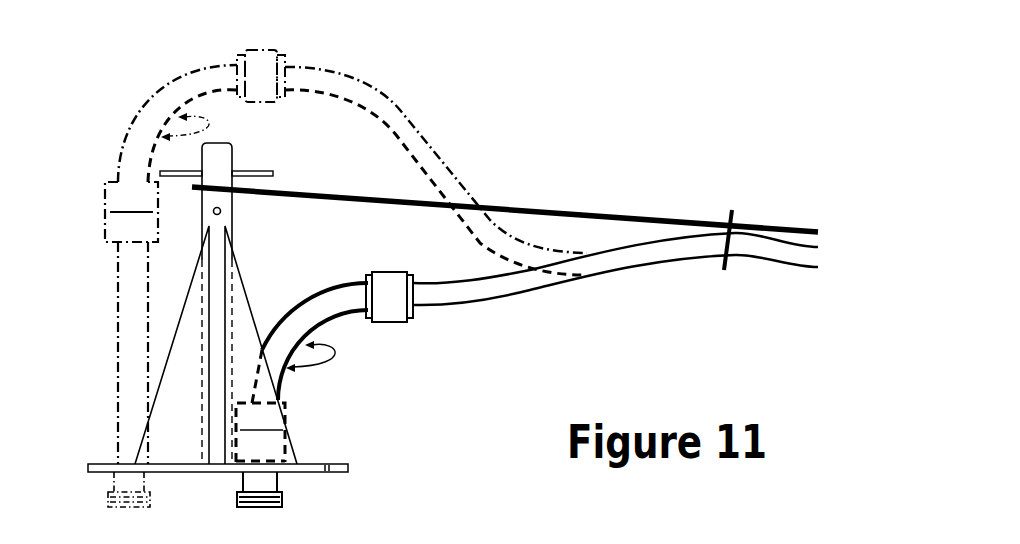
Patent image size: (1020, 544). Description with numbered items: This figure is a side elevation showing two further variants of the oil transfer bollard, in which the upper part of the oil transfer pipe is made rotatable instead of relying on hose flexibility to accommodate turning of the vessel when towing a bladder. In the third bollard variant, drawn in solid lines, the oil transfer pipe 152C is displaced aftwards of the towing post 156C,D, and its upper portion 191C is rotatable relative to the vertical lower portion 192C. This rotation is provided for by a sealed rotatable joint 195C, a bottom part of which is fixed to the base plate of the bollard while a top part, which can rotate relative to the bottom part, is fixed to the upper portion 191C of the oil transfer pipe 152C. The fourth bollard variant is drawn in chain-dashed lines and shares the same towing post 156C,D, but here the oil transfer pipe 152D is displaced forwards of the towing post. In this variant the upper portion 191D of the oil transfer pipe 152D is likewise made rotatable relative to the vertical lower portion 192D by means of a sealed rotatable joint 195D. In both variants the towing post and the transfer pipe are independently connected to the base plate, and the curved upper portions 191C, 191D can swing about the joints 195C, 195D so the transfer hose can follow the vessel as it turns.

The oil transfer pipe 152D is at (307, 149).
The upper portion of the oil transfer pipe 191D is at (128, 132).
The sealed rotatable joint 195D is at (125, 230).
The vertical lower portion of the oil transfer pipe 192D is at (117, 343).
The towing post 156C,D is at (218, 155).
The oil transfer pipe 152C is at (540, 329).
The upper portion of the oil transfer pipe 191C is at (333, 297).
The sealed rotatable joint 195C is at (268, 423).
The vertical lower portion of the oil transfer pipe 192C is at (268, 483).